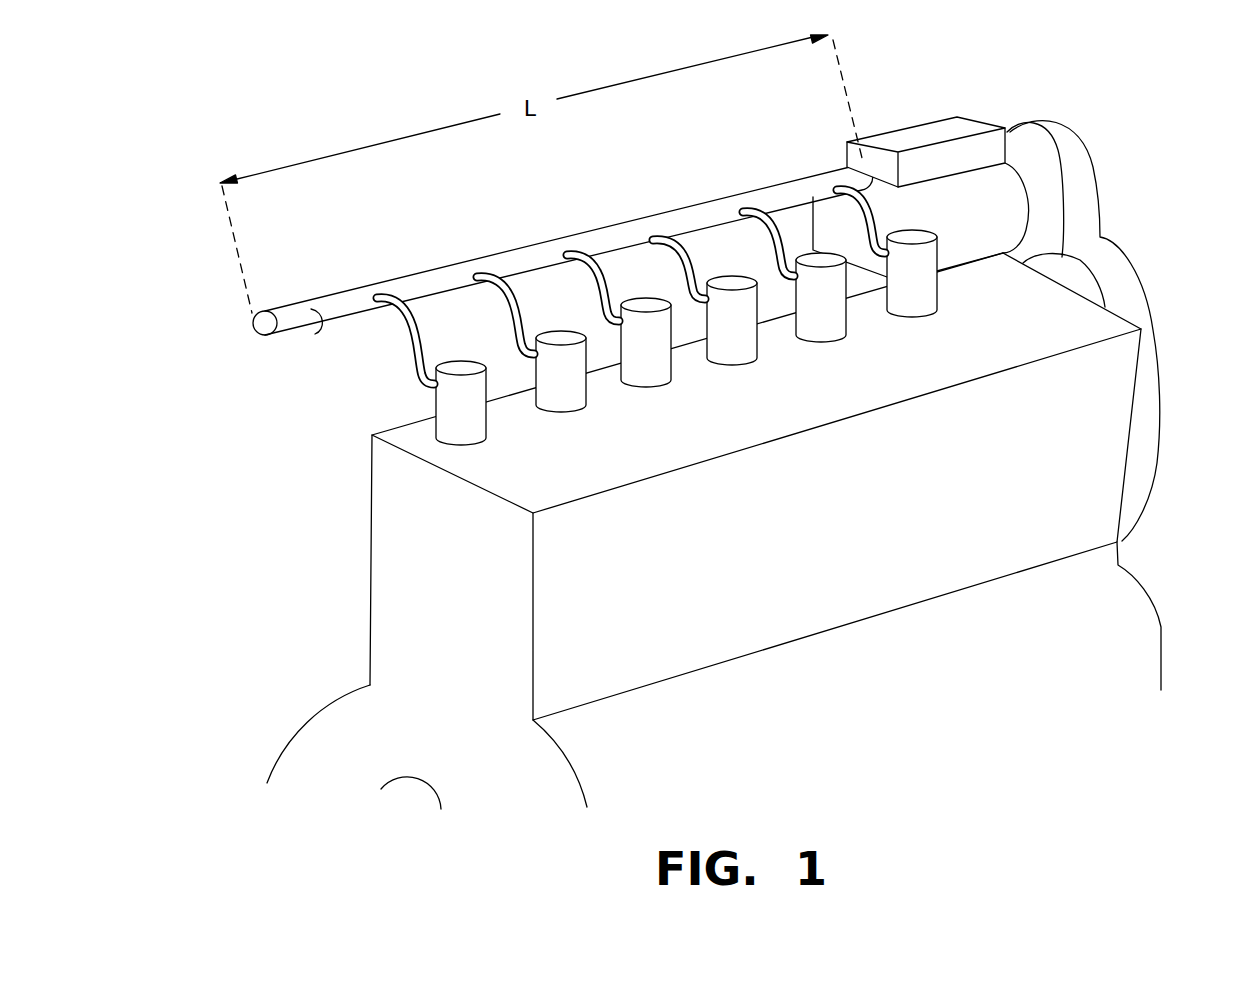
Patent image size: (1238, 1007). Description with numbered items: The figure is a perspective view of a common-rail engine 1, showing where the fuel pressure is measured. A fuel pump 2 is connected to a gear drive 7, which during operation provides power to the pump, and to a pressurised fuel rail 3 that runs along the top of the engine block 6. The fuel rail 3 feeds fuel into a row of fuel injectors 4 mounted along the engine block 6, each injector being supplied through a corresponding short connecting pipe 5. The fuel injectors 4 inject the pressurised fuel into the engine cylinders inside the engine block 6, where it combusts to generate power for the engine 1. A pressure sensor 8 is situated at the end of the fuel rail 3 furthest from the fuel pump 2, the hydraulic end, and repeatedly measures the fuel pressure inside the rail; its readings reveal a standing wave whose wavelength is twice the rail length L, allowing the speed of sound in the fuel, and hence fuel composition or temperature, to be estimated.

The engine 1 is at (1127, 151).
The fuel pump 2 is at (935, 133).
The pressurised fuel rail 3 is at (530, 258).
The fuel injectors 4 is at (573, 392).
The connecting pipes 5 is at (763, 222).
The engine block 6 is at (425, 507).
The gear drive 7 is at (1085, 222).
The pressure sensor 8 is at (300, 310).